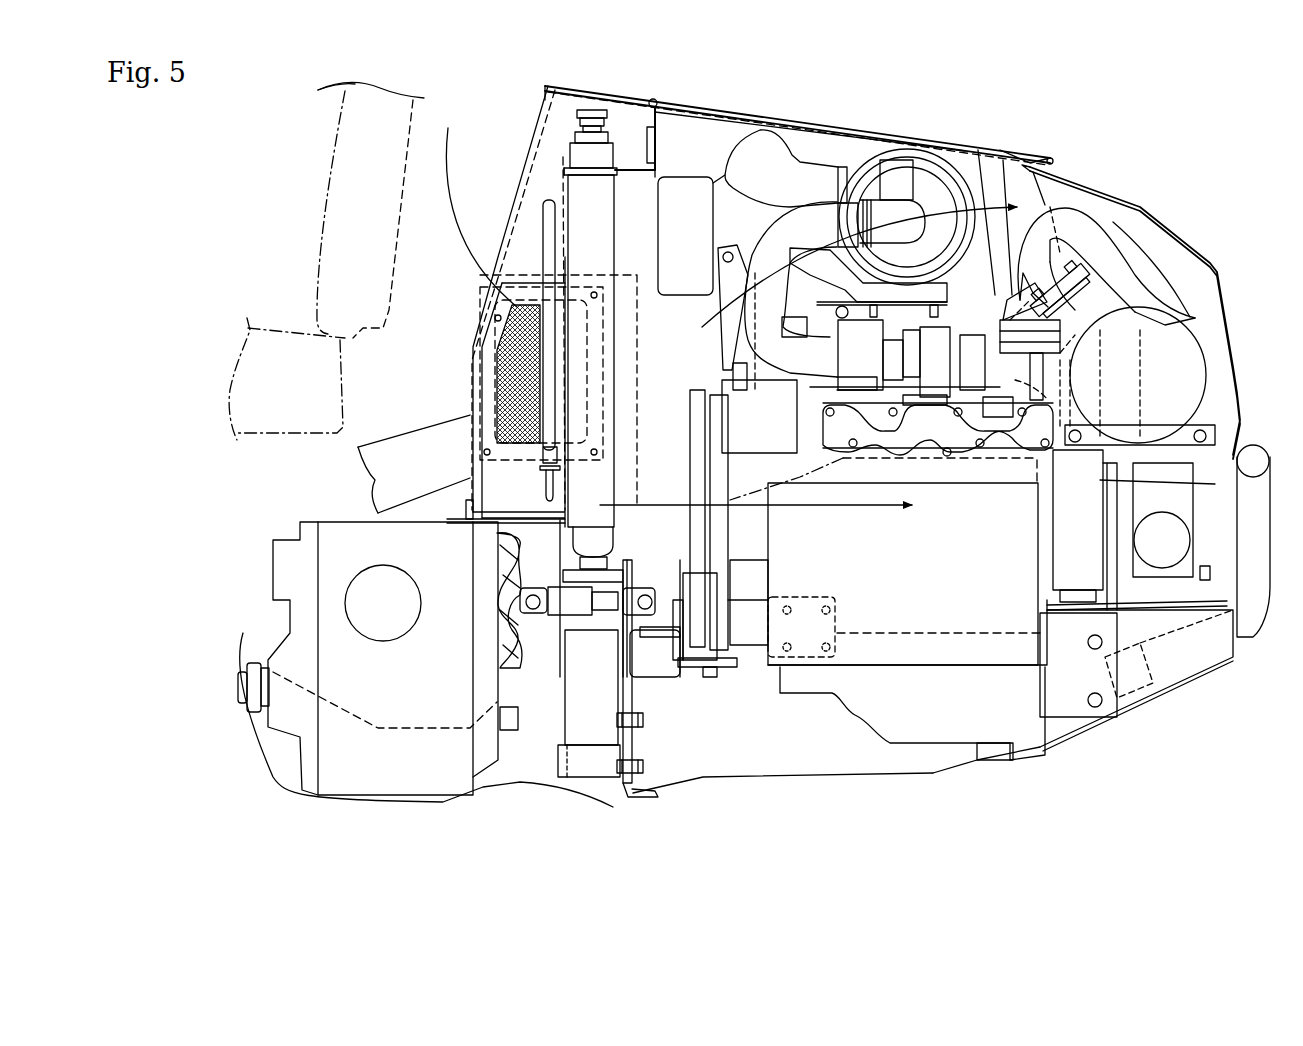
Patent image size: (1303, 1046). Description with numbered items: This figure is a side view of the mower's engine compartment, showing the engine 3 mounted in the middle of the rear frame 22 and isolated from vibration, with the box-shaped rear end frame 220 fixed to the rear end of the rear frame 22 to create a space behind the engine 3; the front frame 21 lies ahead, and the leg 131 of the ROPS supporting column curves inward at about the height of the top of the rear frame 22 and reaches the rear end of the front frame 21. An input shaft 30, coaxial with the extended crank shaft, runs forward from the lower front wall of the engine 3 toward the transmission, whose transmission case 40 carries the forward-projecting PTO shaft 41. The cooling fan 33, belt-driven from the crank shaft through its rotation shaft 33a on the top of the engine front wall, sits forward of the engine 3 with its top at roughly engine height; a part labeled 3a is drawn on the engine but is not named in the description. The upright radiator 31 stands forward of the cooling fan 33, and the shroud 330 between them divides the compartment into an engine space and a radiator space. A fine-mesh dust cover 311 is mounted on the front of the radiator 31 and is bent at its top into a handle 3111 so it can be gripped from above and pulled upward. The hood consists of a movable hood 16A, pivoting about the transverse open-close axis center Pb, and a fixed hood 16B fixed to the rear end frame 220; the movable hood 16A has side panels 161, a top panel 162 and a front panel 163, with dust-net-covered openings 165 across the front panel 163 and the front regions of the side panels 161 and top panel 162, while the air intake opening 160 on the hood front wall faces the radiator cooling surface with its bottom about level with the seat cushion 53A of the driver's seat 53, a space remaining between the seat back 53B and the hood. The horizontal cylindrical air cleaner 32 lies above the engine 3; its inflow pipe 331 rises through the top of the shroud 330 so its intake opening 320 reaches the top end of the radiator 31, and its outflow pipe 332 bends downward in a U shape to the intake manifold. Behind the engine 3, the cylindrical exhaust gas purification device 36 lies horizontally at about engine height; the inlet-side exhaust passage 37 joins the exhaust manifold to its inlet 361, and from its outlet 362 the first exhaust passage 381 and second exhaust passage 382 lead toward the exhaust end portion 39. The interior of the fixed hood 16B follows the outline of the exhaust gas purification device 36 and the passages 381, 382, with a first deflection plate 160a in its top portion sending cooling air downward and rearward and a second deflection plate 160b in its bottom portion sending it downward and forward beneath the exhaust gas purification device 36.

The driver's seat 53 is at (295, 192).
The seat cushion 53A is at (302, 337).
The seat back 53B is at (330, 130).
The air intake opening 160 is at (517, 213).
The openings 165 is at (510, 237).
The radiator 31 is at (610, 192).
The intake opening 320 is at (640, 147).
The front panel 163 is at (563, 157).
The handle 3111 is at (567, 167).
The dust cover 311 is at (630, 337).
The transmission case 40 is at (337, 522).
The PTO shaft 41 is at (270, 700).
The front frame 21 is at (375, 478).
The input shaft 30 is at (581, 605).
The leg 131 is at (607, 690).
The cooling fan 33 is at (677, 523).
The rotation shaft 33a is at (687, 423).
The engine output shaft 3a is at (687, 593).
The engine 3 is at (1025, 703).
The rear frame 22 is at (932, 768).
The movable hood 16A is at (907, 132).
The fixed hood 16B is at (1140, 200).
The first deflection plate 160a is at (1163, 237).
The second deflection plate 160b is at (1173, 487).
The top panel 162 is at (1020, 157).
The air cleaner 32 is at (927, 187).
The side panels 161 is at (800, 140).
The inflow pipe 331 is at (817, 170).
The shroud 330 is at (660, 190).
The outflow pipe 332 is at (765, 240).
The first exhaust passage 381 is at (1073, 223).
The second exhaust passage 382 is at (1180, 313).
The outlet 362 is at (1090, 313).
The exhaust gas purification device 36 is at (1183, 357).
The open-close axis center Pb is at (1012, 378).
The inlet 361 is at (1063, 380).
The inlet-side exhaust passage 37 is at (1075, 445).
The exhaust end portion 39 is at (1193, 543).
The rear end frame 220 is at (1187, 687).